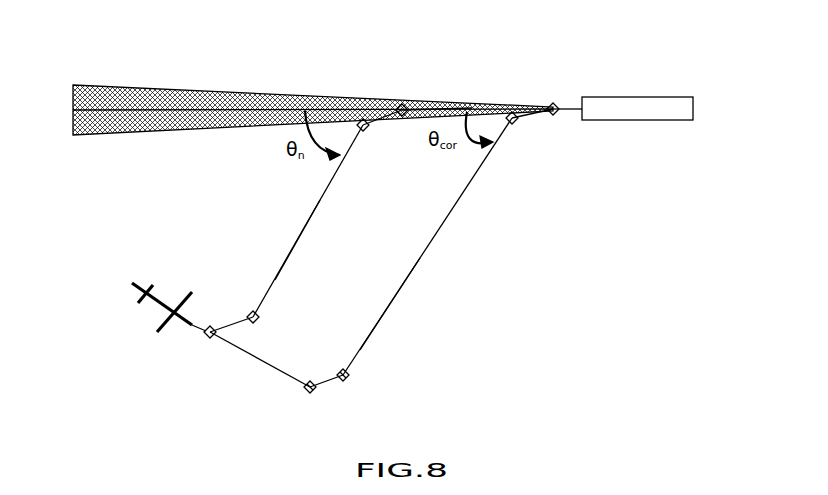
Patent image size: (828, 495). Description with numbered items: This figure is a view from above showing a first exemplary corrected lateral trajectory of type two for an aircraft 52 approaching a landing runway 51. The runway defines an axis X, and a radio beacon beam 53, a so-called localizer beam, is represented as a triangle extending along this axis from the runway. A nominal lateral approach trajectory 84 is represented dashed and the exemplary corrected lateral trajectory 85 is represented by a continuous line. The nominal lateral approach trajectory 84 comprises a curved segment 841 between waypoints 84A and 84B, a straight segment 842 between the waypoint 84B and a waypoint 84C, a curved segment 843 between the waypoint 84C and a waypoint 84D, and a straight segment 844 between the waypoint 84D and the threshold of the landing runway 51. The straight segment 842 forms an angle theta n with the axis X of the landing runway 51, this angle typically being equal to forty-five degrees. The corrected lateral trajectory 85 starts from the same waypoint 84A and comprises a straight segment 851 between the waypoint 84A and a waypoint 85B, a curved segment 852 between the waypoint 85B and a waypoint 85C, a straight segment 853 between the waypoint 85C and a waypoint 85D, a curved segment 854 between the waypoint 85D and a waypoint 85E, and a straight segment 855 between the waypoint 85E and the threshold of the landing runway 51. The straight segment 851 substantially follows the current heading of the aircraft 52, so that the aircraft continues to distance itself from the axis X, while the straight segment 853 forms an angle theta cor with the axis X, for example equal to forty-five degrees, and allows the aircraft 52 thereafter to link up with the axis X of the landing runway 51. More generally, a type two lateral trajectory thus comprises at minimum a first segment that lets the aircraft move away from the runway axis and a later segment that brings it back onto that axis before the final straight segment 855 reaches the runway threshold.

The landing runway 51 is at (630, 112).
The aircraft 52 is at (152, 308).
The radio beacon beam 53 is at (135, 131).
The axis of the landing runway X is at (197, 112).
The nominal lateral approach trajectory 84 is at (312, 212).
The waypoint 84A is at (208, 340).
The waypoint 84B is at (262, 318).
The waypoint 84C is at (367, 133).
The waypoint 84D is at (410, 100).
The curved segment 841 is at (230, 325).
The straight segment 842 is at (288, 256).
The curved segment 843 is at (373, 101).
The straight segment 844 is at (460, 105).
The corrected lateral trajectory 85 is at (450, 218).
The waypoint 85B is at (310, 381).
The waypoint 85C is at (352, 378).
The waypoint 85D is at (515, 128).
The waypoint 85E is at (553, 103).
The straight segment 851 is at (262, 361).
The curved segment 852 is at (328, 382).
The straight segment 853 is at (410, 280).
The curved segment 854 is at (540, 115).
The straight segment 855 is at (572, 107).